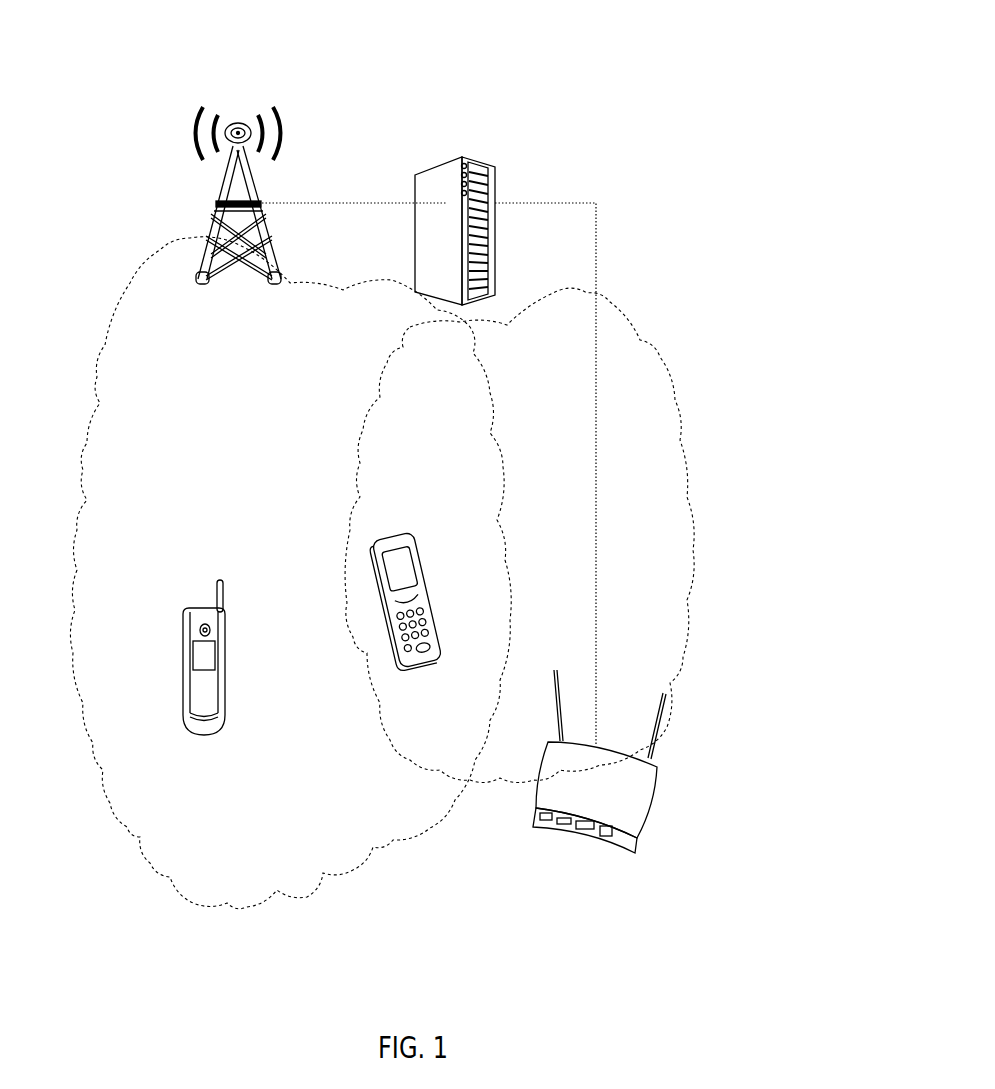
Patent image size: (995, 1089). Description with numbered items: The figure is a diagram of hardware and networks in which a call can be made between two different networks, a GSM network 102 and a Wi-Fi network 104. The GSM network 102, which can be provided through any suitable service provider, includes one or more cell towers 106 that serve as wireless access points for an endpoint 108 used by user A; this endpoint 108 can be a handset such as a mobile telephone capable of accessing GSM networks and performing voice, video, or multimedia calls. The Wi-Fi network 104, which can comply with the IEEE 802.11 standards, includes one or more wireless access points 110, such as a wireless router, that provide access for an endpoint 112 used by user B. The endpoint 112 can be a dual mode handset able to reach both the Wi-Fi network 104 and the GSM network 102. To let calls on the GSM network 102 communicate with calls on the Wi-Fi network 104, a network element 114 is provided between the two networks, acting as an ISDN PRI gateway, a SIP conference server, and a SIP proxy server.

The GSM network 102 is at (105, 343).
The Wi-Fi network 104 is at (614, 298).
The cell tower 106 is at (206, 200).
The endpoint 108 is at (182, 701).
The wireless access point 110 is at (656, 834).
The endpoint 112 is at (446, 620).
The network element 114 is at (459, 163).